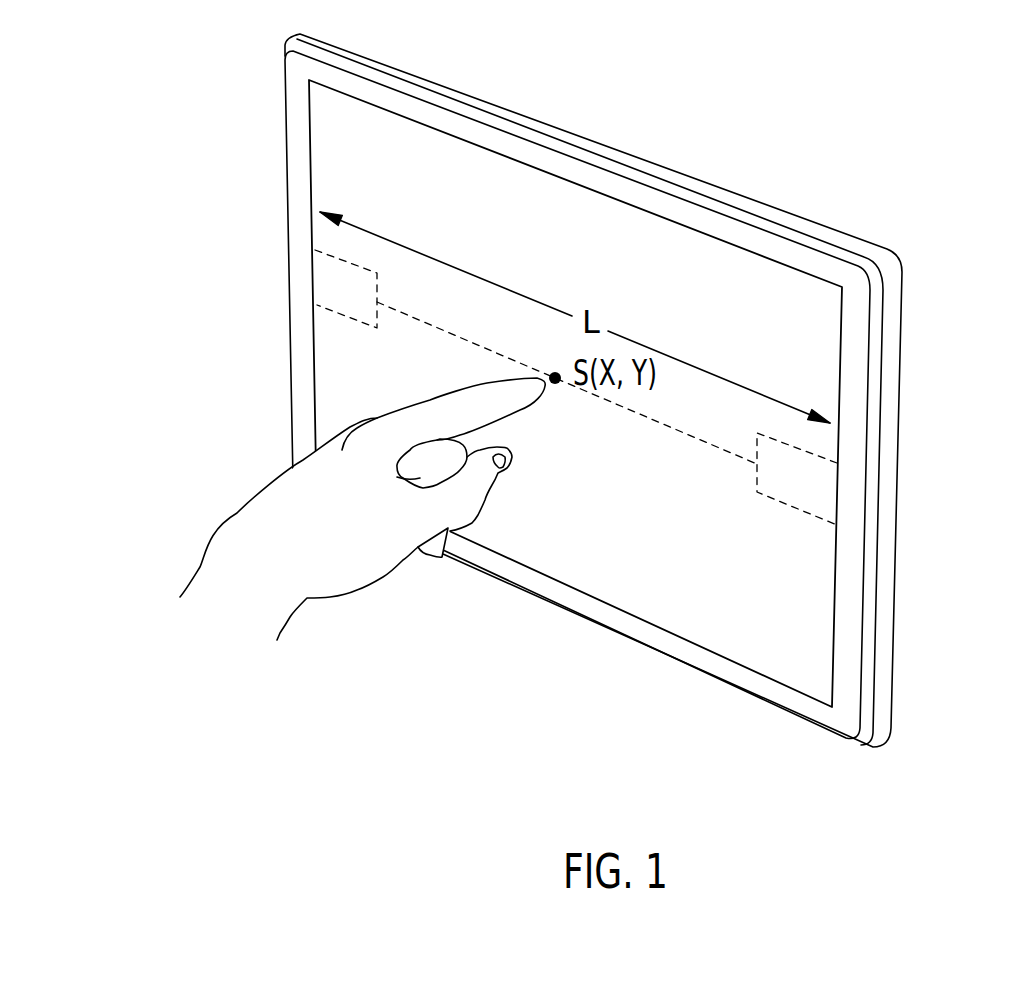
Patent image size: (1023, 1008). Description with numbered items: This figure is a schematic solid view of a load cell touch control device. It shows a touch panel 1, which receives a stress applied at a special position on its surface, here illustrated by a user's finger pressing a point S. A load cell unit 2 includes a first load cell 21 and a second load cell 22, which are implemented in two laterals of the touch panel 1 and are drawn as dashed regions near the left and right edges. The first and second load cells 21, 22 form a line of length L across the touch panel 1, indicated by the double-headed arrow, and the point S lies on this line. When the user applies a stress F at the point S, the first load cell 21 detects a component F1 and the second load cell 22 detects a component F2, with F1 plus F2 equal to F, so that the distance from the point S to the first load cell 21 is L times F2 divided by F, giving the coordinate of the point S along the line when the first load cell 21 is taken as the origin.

The touch panel 1 is at (793, 220).
The load cell unit 2 is at (589, 380).
The first load cell 21 is at (328, 278).
The second load cell 22 is at (812, 492).